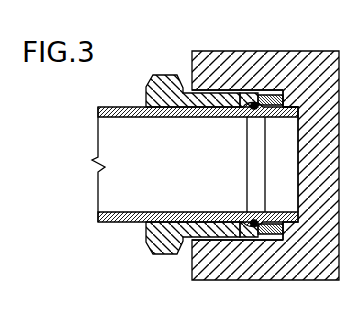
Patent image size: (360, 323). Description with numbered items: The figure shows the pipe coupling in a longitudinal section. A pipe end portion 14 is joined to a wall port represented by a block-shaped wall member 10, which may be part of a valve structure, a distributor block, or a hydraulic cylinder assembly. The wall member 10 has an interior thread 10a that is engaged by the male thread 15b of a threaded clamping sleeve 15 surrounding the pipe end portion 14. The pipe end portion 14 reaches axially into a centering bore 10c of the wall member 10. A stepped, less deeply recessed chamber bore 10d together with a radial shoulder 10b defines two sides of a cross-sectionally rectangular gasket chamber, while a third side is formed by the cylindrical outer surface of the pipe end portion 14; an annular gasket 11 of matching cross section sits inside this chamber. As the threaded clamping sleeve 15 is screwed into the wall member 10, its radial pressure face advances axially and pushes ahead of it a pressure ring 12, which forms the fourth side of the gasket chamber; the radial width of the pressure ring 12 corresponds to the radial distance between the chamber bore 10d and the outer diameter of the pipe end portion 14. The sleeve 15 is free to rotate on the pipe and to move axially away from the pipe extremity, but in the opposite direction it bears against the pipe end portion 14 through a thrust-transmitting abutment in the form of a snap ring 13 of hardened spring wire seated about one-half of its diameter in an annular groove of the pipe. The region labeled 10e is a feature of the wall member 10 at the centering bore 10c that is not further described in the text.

The wall member 10 is at (191, 267).
The interior thread 10a is at (223, 90).
The radial shoulder 10b is at (296, 98).
The centering bore 10c is at (291, 200).
The chamber bore 10d is at (267, 240).
The body bore end 10e is at (291, 119).
The annular gasket 11 is at (276, 95).
The pressure ring 12 is at (262, 102).
The snap ring 13 is at (243, 95).
The pipe end portion 14 is at (98, 142).
The threaded clamping sleeve 15 is at (145, 241).
The male thread 15b is at (213, 242).